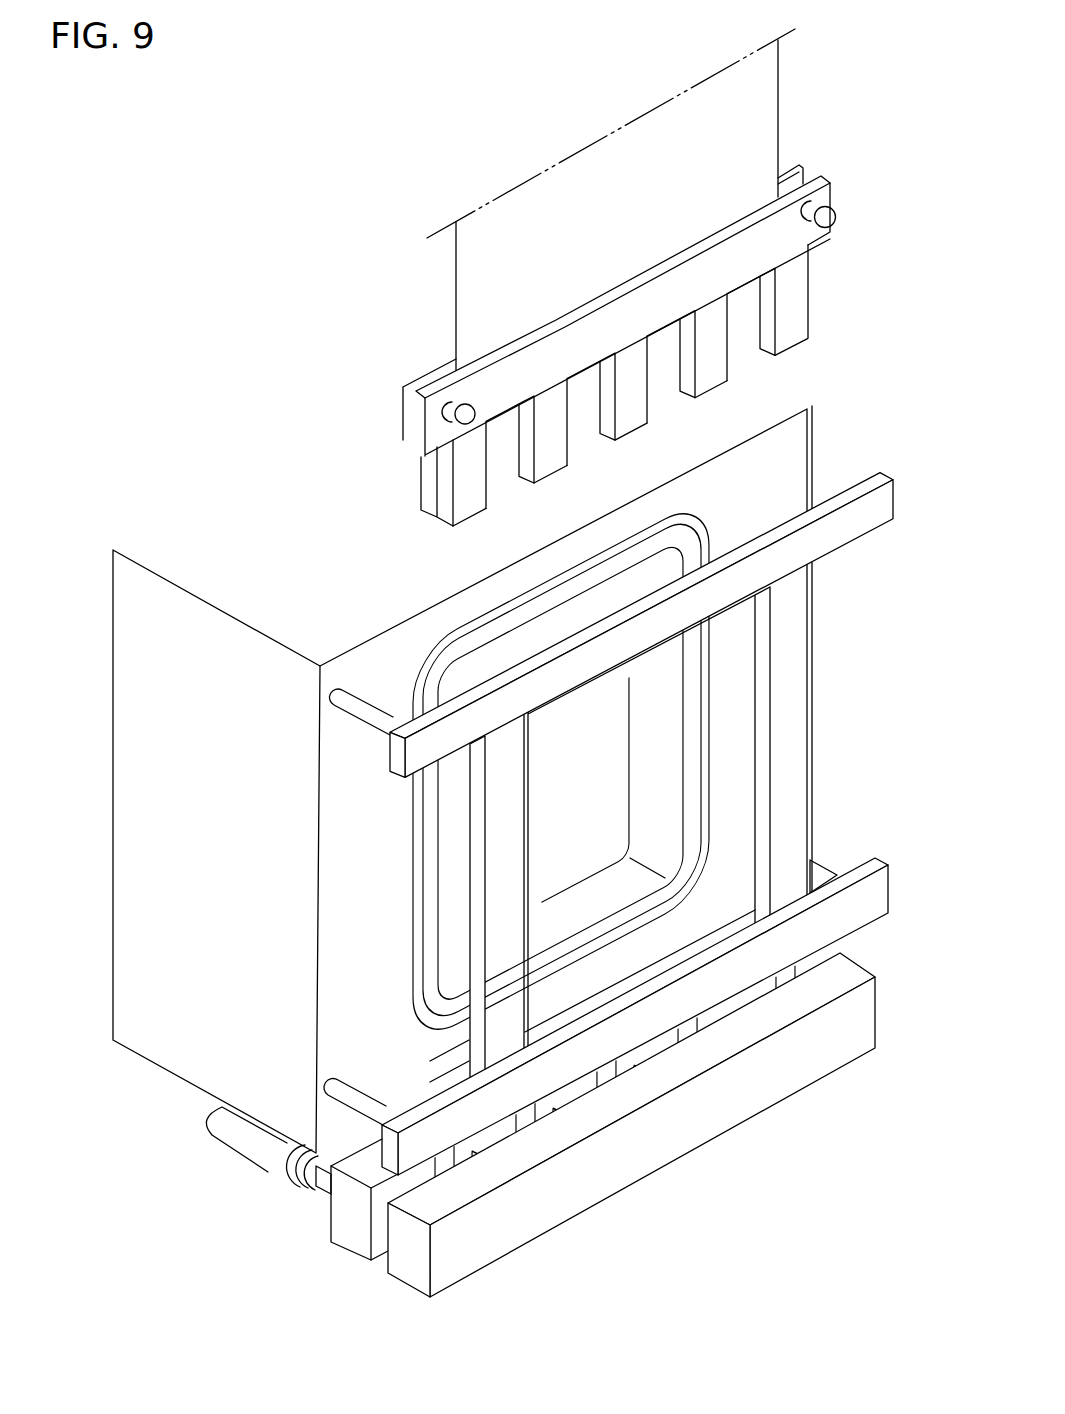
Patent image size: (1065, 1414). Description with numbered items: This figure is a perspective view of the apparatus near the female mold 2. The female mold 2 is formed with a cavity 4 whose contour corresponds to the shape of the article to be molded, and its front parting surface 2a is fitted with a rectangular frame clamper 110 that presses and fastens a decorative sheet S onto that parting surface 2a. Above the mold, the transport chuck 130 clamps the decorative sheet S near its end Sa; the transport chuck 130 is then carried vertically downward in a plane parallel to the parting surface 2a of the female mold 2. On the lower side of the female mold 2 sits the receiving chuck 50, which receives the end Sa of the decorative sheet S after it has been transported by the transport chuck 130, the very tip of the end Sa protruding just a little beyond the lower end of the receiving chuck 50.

The decorative sheet S is at (762, 103).
The end of the decorative sheet Sa is at (598, 440).
The transport chuck 130 is at (829, 257).
The female mold 2 is at (810, 430).
The parting surface 2a is at (732, 665).
The cavity 4 is at (636, 777).
The rectangular frame clamper 110 is at (818, 541).
The receiving chuck 50 is at (777, 1083).